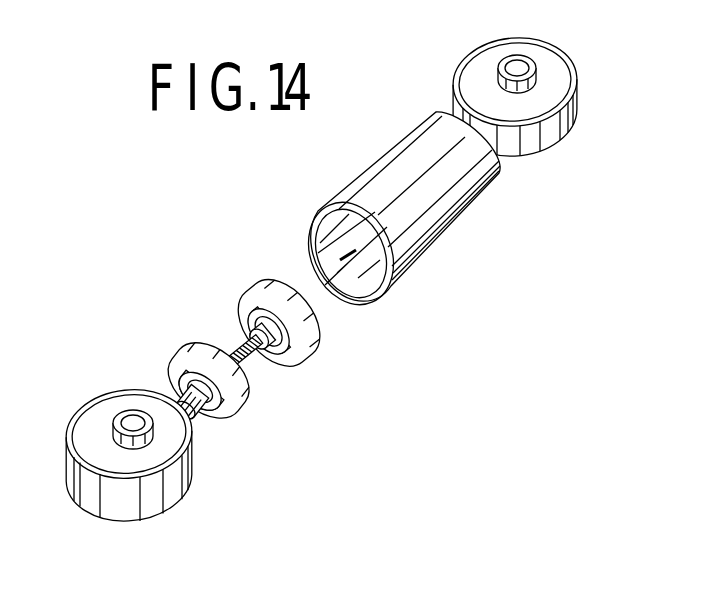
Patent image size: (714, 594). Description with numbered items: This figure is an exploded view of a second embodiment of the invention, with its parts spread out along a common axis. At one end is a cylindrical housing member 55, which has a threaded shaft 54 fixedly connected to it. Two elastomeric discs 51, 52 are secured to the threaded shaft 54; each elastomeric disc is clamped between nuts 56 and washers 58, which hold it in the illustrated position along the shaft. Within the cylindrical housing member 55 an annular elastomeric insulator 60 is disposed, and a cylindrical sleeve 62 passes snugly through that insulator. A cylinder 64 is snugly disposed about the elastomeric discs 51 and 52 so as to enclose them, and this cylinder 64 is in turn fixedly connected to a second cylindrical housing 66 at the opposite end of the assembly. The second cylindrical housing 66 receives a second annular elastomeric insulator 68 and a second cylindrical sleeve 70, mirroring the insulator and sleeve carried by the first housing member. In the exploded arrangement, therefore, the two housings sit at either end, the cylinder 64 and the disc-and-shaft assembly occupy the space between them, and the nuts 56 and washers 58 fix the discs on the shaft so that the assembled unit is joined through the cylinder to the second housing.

The elastomeric disc 51 is at (265, 283).
The elastomeric disc 52 is at (193, 348).
The threaded shaft 54 is at (240, 340).
The cylindrical housing member 55 is at (80, 423).
The nut 56 is at (288, 348).
The washer 58 is at (315, 337).
The annular elastomeric insulator 60 is at (117, 407).
The cylindrical sleeve 62 is at (150, 437).
The cylinder 64 is at (452, 203).
The second cylindrical housing 66 is at (476, 60).
The second annular elastomeric insulator 68 is at (548, 90).
The second cylindrical sleeve 70 is at (530, 62).